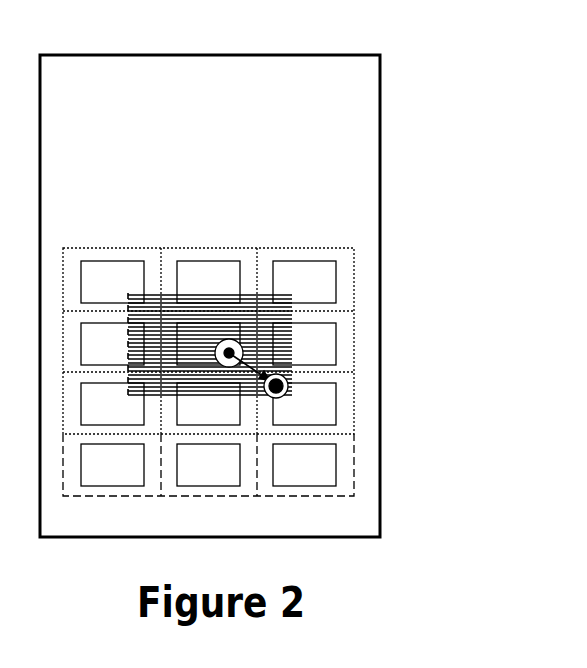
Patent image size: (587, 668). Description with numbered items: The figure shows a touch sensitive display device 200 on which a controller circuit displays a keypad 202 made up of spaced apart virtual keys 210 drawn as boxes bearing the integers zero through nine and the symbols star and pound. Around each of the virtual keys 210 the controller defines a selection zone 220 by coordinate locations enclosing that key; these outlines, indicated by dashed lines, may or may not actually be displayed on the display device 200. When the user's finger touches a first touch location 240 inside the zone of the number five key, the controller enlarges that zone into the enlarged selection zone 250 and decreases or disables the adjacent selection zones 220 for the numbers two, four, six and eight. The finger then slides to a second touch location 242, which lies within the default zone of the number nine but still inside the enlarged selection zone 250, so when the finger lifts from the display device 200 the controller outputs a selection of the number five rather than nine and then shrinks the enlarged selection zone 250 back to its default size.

The touch sensitive display device 200 is at (212, 55).
The keypad 202 is at (148, 213).
The virtual keys 210 is at (227, 260).
The selection zones 220 is at (178, 249).
The first touch location 240 is at (244, 346).
The enlarged selection zone 250 is at (292, 362).
The second touch location 242 is at (295, 382).